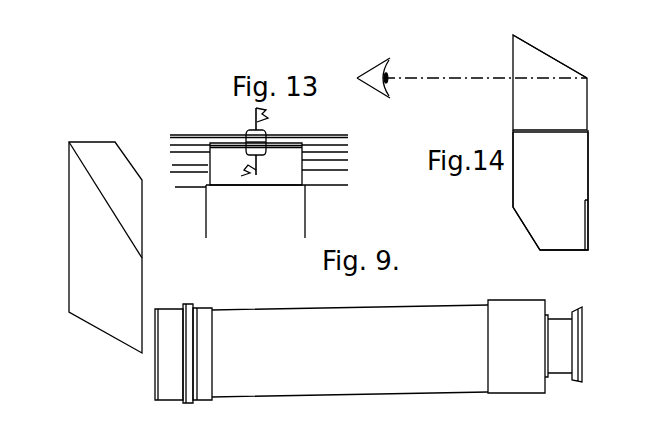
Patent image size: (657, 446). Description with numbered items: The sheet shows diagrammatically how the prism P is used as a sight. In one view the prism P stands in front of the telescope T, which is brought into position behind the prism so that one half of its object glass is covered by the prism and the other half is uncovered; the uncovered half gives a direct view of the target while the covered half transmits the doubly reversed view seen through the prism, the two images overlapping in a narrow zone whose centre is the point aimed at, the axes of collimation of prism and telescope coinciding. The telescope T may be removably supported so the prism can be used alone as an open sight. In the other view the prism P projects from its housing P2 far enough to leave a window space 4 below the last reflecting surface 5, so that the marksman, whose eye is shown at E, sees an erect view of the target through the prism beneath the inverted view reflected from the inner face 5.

In FIG. 14, the prism P is at (577, 97).
In FIG. 9, the prism P is at (87, 258).
In FIG. 14, the housing P2 is at (573, 173).
In FIG. 14, the window space 4 is at (588, 123).
In FIG. 14, the last reflecting surface 5 is at (563, 63).
In FIG. 14, the eye E is at (472, 67).
In FIG. 9, the telescope T is at (230, 327).